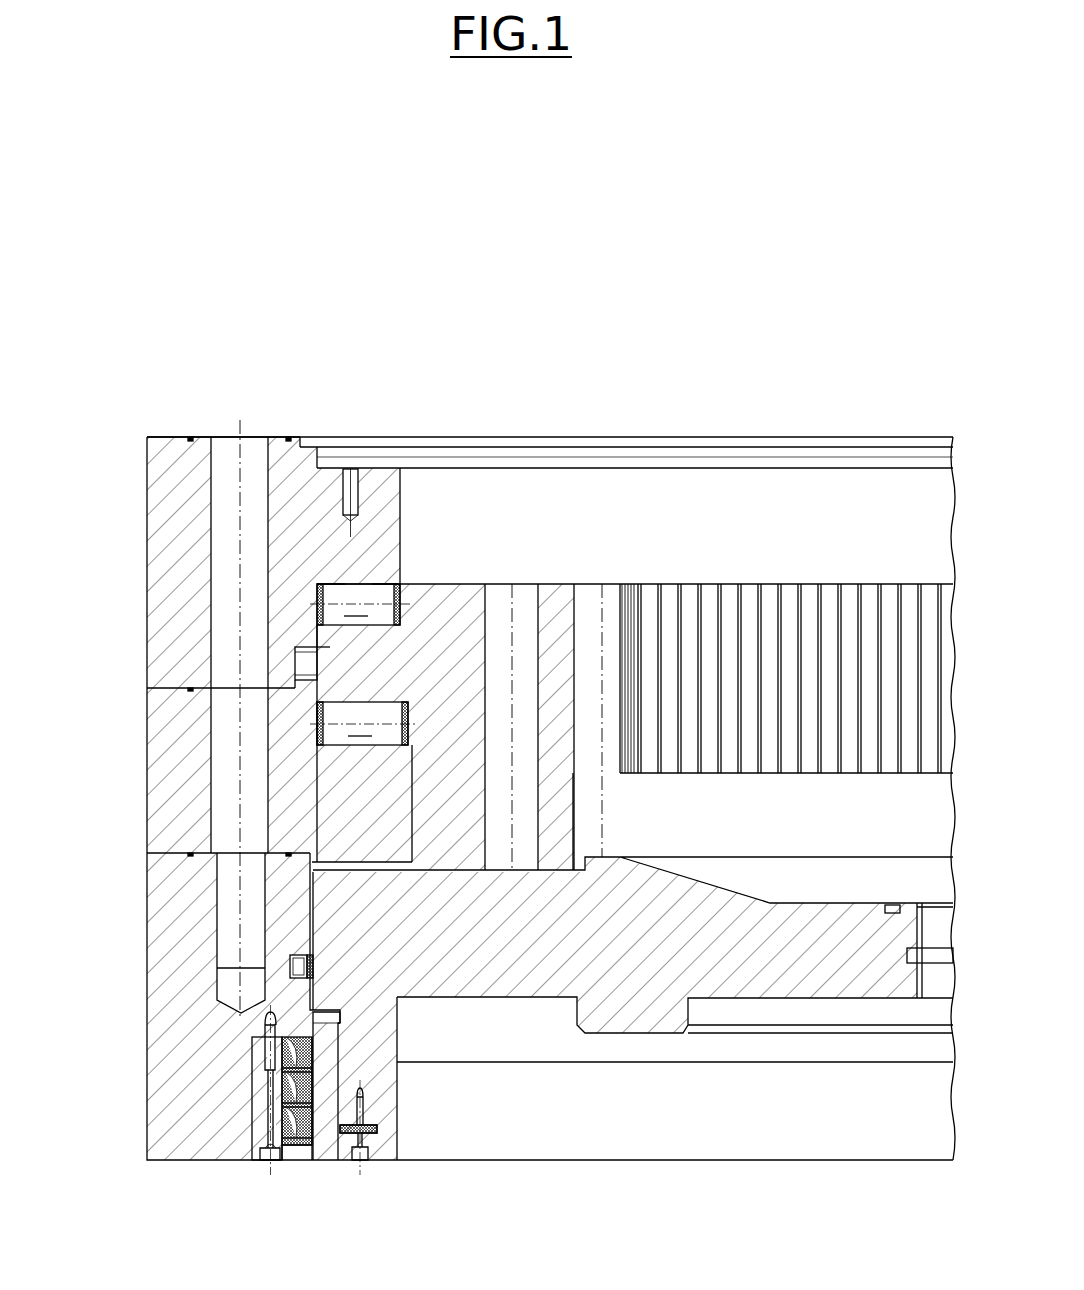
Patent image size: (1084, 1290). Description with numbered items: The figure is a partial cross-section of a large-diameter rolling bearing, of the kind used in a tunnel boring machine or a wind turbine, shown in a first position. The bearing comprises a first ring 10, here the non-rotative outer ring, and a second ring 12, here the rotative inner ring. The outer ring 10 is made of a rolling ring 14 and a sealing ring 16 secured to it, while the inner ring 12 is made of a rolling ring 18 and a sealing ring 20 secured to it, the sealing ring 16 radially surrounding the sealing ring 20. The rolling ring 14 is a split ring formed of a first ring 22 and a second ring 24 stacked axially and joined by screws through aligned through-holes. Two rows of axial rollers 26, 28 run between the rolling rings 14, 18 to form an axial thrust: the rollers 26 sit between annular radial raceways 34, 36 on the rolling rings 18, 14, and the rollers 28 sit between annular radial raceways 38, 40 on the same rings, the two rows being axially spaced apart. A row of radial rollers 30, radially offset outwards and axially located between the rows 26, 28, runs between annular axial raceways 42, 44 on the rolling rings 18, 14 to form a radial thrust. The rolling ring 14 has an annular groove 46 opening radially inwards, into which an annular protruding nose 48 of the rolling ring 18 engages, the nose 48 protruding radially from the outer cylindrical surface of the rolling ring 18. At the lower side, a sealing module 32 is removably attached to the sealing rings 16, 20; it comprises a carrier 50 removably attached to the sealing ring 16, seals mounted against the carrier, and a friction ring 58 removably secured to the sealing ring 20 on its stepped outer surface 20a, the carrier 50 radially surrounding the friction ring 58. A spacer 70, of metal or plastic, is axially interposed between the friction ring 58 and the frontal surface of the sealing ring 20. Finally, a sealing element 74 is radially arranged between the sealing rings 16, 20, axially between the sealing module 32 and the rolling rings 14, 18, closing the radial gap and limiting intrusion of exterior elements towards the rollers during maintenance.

The first ring 10 is at (110, 786).
The second ring 12 is at (612, 583).
The rolling ring 14 is at (110, 518).
The sealing ring 16 is at (147, 1012).
The rolling ring 18 is at (468, 583).
The sealing ring 20 is at (455, 1000).
The outer surface 20a is at (330, 1065).
The first ring 22 is at (147, 542).
The second ring 24 is at (147, 818).
The axial rollers 26 is at (360, 604).
The axial rollers 28 is at (364, 723).
The radial rollers 30 is at (306, 663).
The sealing module 32 is at (285, 1162).
The annular radial raceway 34 is at (388, 600).
The annular radial raceway 36 is at (337, 588).
The annular radial raceway 38 is at (315, 718).
The annular radial raceway 40 is at (313, 728).
The annular axial raceway 42 is at (330, 648).
The annular axial raceway 44 is at (287, 690).
The annular groove 46 is at (317, 637).
The annular protruding nose 48 is at (383, 653).
The carrier 50 is at (253, 1123).
The friction ring 58 is at (330, 1160).
The spacer 70 is at (372, 1157).
The sealing element 74 is at (290, 962).